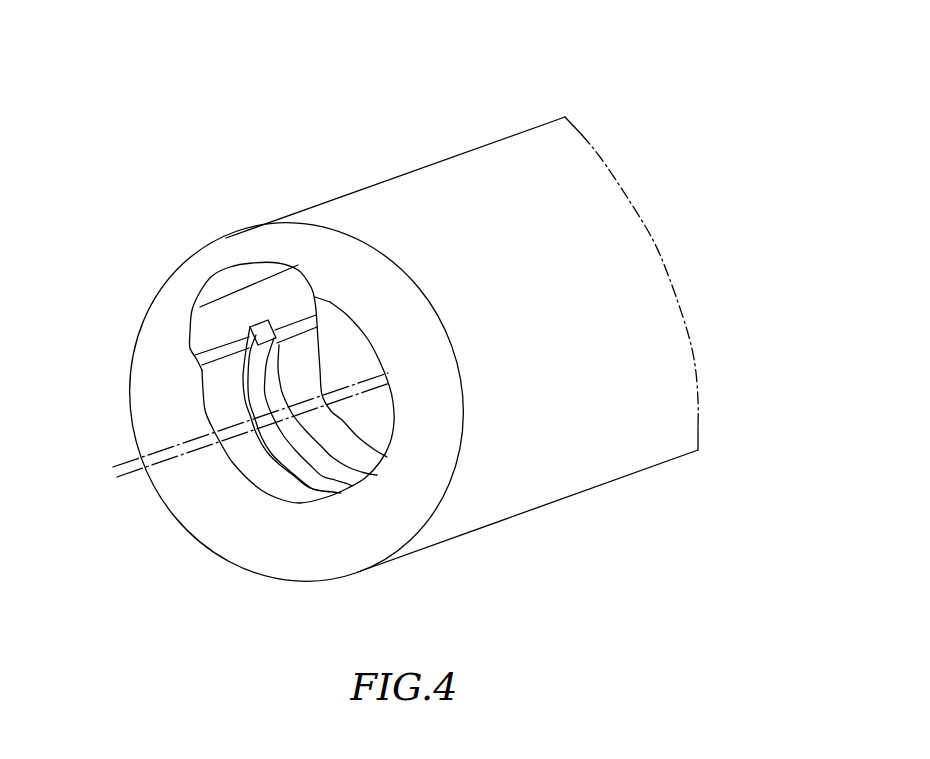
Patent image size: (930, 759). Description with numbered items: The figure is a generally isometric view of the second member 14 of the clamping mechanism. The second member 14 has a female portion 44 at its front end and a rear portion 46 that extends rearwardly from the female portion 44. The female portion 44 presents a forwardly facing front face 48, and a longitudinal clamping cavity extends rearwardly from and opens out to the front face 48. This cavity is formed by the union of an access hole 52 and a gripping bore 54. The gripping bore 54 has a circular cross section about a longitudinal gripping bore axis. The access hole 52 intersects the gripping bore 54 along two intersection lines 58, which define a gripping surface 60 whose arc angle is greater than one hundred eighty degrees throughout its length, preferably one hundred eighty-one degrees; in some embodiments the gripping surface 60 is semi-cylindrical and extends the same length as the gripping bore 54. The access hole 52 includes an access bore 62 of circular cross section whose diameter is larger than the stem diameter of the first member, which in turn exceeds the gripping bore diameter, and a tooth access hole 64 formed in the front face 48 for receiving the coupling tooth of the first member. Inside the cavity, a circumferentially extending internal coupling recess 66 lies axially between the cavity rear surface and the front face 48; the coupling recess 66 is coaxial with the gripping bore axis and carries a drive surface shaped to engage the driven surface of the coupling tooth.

The second member 14 is at (457, 133).
The female portion 44 is at (237, 206).
The rear portion 46 is at (547, 115).
The front face 48 is at (405, 482).
The access hole 52 is at (227, 413).
The gripping bore 54 is at (276, 479).
The intersection lines 58 is at (314, 420).
The gripping surface 60 is at (243, 453).
The access bore 62 is at (220, 380).
The tooth access hole 64 is at (220, 322).
The coupling recess 66 is at (255, 372).